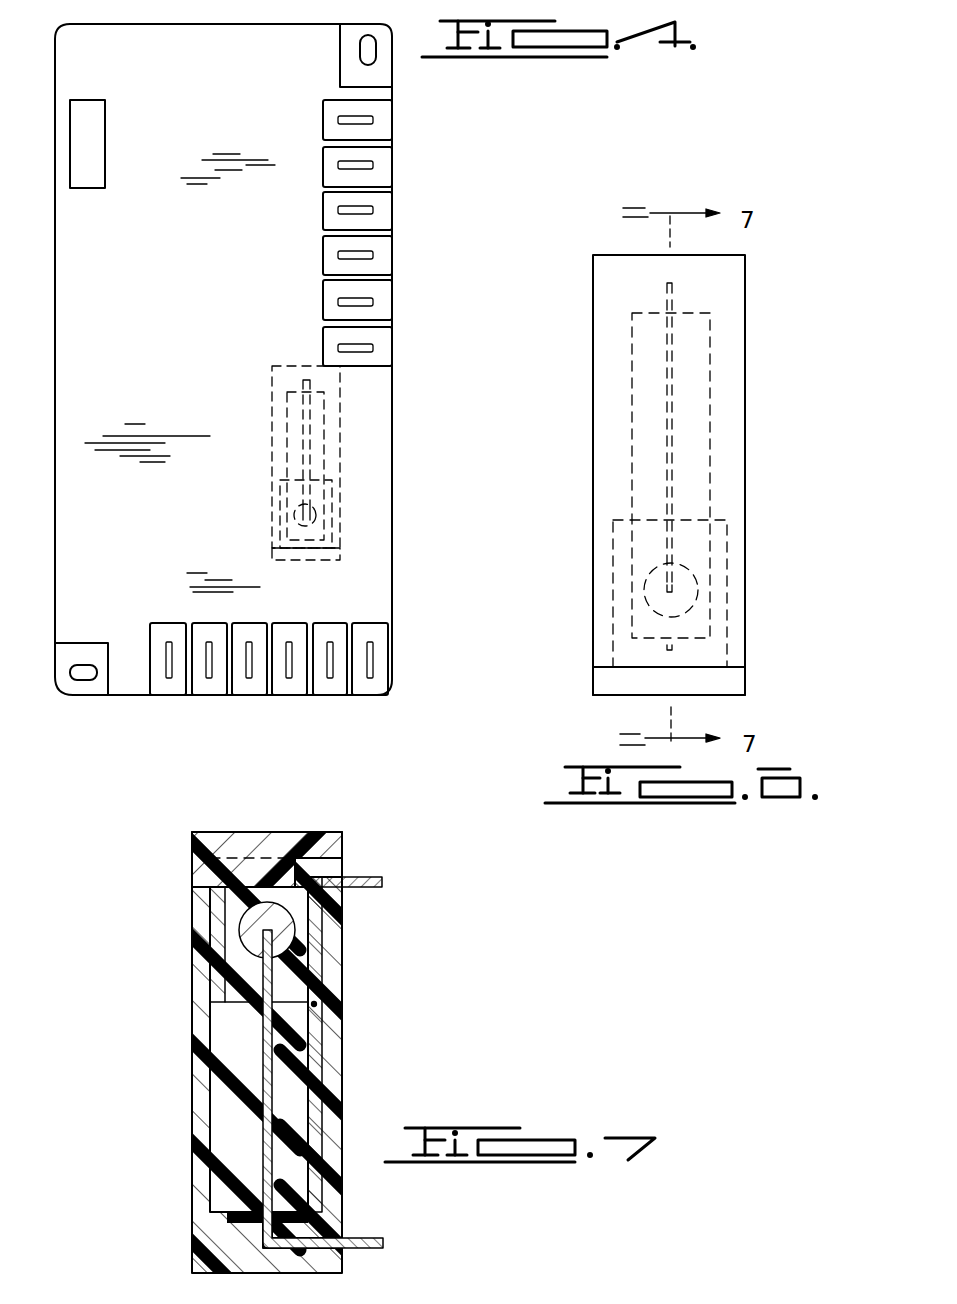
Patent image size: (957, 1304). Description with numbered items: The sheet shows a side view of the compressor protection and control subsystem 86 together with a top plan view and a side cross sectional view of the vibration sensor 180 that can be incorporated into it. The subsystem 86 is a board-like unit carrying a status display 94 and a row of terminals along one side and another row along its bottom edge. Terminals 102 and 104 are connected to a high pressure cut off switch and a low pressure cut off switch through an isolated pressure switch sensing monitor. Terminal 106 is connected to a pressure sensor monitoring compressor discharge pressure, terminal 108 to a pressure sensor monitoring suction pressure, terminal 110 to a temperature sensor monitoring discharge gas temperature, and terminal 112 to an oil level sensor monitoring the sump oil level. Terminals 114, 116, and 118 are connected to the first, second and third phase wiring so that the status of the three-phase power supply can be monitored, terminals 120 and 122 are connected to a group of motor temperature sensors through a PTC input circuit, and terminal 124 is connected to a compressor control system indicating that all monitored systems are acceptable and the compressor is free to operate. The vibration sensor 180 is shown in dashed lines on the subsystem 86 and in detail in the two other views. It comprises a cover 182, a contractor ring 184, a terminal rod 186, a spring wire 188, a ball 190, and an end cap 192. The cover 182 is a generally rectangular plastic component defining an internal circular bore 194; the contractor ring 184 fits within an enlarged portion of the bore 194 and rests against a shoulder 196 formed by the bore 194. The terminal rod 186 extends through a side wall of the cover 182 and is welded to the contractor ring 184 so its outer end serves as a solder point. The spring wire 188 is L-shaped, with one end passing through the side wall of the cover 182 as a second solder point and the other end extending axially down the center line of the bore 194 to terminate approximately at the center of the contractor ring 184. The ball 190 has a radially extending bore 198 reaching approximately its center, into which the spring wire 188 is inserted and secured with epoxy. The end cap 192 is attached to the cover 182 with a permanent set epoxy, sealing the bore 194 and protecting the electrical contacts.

In FIG. 4, the compressor protection and control subsystem 86 is at (100, 55).
In FIG. 4, the status display 94 is at (90, 176).
In FIG. 4, the terminal 102 is at (384, 119).
In FIG. 4, the terminal 104 is at (384, 165).
In FIG. 4, the terminal 106 is at (384, 210).
In FIG. 4, the terminal 108 is at (384, 256).
In FIG. 4, the terminal 110 is at (384, 301).
In FIG. 4, the terminal 112 is at (384, 349).
In FIG. 4, the terminal 114 is at (372, 697).
In FIG. 4, the terminal 116 is at (322, 697).
In FIG. 4, the terminal 118 is at (285, 697).
In FIG. 4, the terminal 120 is at (240, 697).
In FIG. 4, the terminal 122 is at (200, 697).
In FIG. 4, the terminal 124 is at (160, 697).
In FIG. 4, the vibration sensor 180 is at (332, 466).
In FIG. 6, the vibration sensor 180 is at (782, 288).
In FIG. 7, the vibration sensor 180 is at (155, 986).
In FIG. 6, the cover 182 is at (746, 432).
In FIG. 7, the cover 182 is at (205, 1128).
In FIG. 6, the contractor ring 184 is at (722, 532).
In FIG. 7, the contractor ring 184 is at (318, 958).
In FIG. 7, the terminal rod 186 is at (375, 877).
In FIG. 7, the spring wire 188 is at (273, 1093).
In FIG. 7, the ball 190 is at (262, 920).
In FIG. 6, the end cap 192 is at (735, 680).
In FIG. 7, the end cap 192 is at (323, 842).
In FIG. 7, the internal circular bore 194 is at (232, 1108).
In FIG. 7, the shoulder 196 is at (316, 1005).
In FIG. 7, the radially extending bore 198 is at (265, 950).